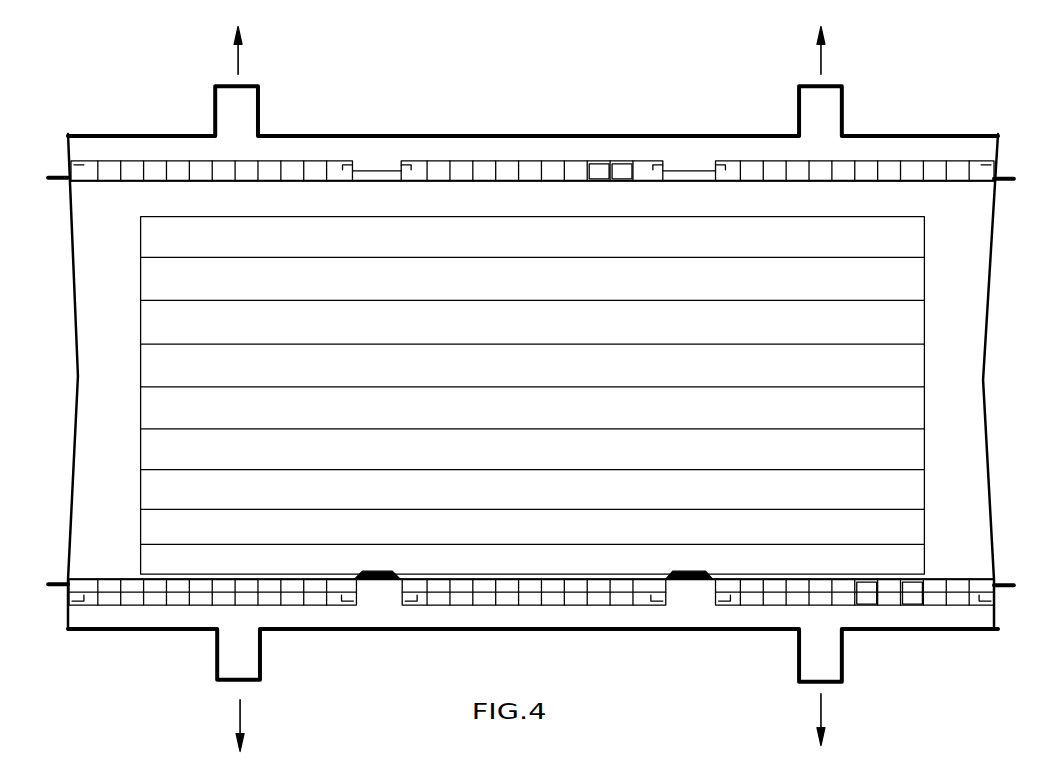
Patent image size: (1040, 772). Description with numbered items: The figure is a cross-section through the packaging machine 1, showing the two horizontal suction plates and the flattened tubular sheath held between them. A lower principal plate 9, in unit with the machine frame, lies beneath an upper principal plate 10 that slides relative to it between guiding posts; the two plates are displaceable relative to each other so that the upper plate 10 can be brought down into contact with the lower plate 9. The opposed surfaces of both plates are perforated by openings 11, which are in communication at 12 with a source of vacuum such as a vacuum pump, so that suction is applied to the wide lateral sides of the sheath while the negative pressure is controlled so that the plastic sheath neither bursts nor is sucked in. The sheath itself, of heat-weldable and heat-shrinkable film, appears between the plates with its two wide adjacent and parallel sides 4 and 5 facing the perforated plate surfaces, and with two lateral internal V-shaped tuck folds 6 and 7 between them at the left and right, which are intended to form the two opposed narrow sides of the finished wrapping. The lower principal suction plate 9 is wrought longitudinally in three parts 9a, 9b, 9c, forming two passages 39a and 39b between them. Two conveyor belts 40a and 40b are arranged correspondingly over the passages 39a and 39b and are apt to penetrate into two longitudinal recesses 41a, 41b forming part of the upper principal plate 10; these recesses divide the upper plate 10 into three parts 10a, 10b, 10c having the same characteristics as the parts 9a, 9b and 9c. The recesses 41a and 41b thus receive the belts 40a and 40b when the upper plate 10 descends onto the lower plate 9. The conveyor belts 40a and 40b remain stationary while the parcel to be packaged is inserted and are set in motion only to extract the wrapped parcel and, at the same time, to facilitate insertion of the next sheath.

The electrode stack 1 is at (930, 283).
The wide side of the sheath 4 is at (128, 186).
The wide side of the sheath 5 is at (350, 569).
The lateral internal V-shaped tuck fold 6 is at (66, 272).
The lateral internal V-shaped tuck fold 7 is at (983, 383).
The lower principal plate 9 is at (588, 634).
The part of the lower principal plate 9a is at (935, 578).
The part of the lower principal plate 9b is at (548, 577).
The part of the lower principal plate 9c is at (207, 577).
The upper principal plate 10 is at (540, 125).
The part of the upper principal plate 10a is at (826, 178).
The part of the upper principal plate 10b is at (538, 178).
The part of the upper principal plate 10c is at (238, 178).
The openings 11 is at (617, 163).
The communication with the vacuum source 12 is at (233, 58).
The passage 39a is at (695, 605).
The passage 39b is at (383, 603).
The conveyor belt 40a is at (700, 570).
The conveyor belt 40b is at (378, 570).
The longitudinal recess 41a is at (700, 178).
The longitudinal recess 41b is at (382, 178).